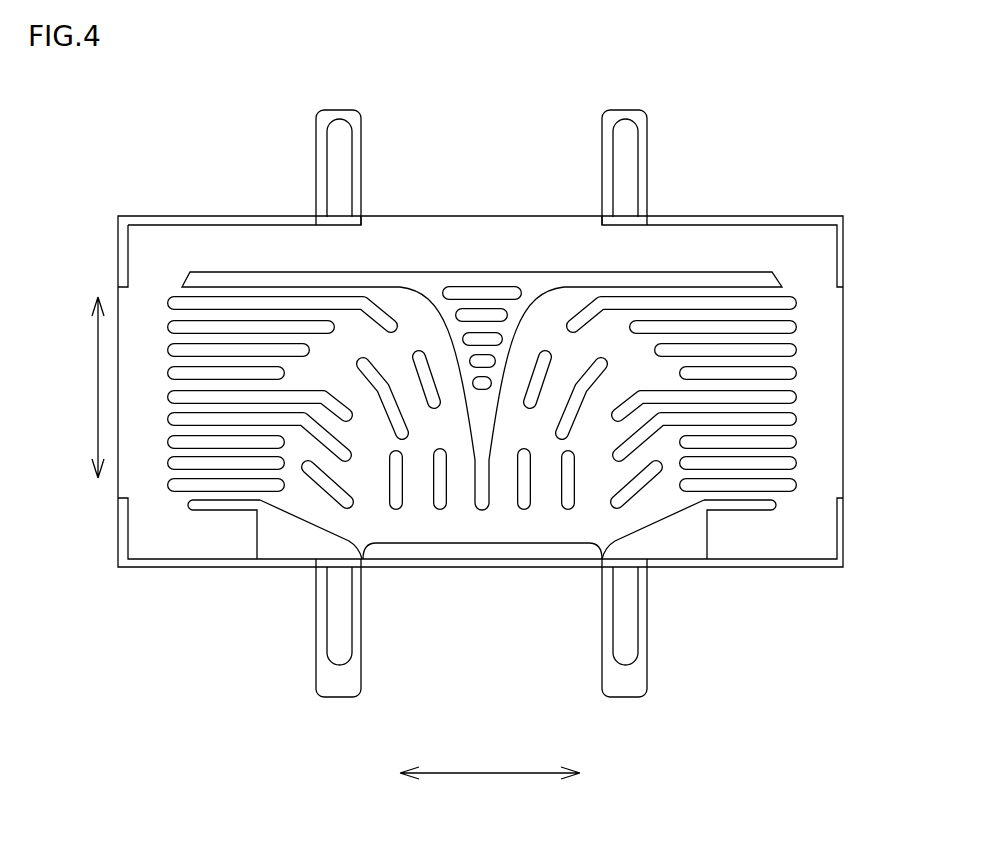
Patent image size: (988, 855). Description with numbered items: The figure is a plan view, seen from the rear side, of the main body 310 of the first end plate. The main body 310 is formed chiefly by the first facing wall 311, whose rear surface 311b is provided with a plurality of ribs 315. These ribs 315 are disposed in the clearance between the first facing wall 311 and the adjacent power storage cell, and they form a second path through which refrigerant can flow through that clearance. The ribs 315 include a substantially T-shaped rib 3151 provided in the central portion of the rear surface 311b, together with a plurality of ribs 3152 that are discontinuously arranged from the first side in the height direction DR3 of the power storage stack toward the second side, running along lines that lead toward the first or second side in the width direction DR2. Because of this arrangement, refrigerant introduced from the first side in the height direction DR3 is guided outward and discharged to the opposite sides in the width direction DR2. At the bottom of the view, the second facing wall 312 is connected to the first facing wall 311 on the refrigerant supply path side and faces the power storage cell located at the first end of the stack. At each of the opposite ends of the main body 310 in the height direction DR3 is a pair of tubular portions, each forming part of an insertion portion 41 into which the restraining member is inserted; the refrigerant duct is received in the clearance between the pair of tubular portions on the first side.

The main body 310 is at (512, 345).
The first facing wall 311 is at (845, 378).
The rear surface 311b is at (198, 534).
The second facing wall 312 is at (481, 561).
The ribs 315 is at (540, 330).
The substantially T-shaped rib 3151 is at (483, 279).
The ribs 3152 is at (723, 302).
The insertion portion 41 is at (340, 109).
The width direction DR2 is at (483, 775).
The height direction DR3 is at (97, 383).